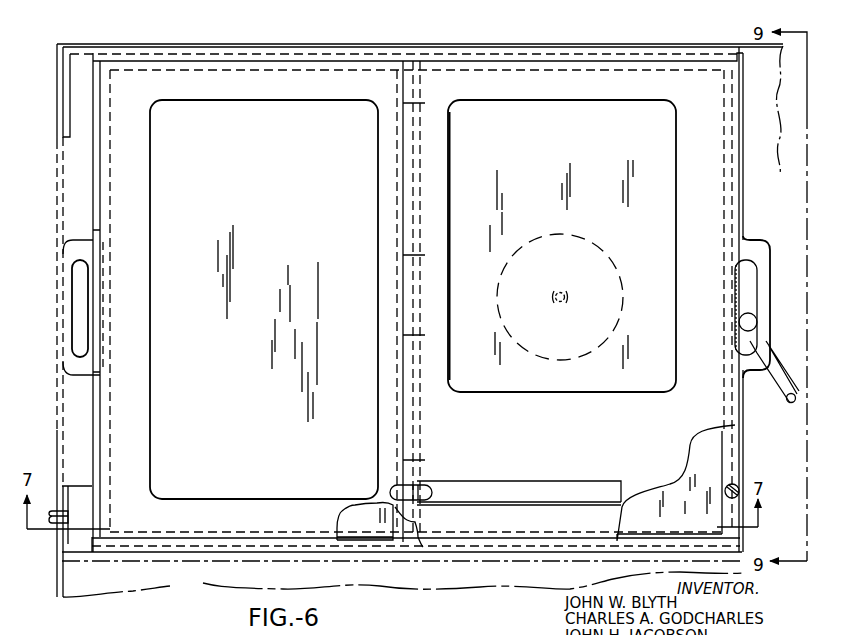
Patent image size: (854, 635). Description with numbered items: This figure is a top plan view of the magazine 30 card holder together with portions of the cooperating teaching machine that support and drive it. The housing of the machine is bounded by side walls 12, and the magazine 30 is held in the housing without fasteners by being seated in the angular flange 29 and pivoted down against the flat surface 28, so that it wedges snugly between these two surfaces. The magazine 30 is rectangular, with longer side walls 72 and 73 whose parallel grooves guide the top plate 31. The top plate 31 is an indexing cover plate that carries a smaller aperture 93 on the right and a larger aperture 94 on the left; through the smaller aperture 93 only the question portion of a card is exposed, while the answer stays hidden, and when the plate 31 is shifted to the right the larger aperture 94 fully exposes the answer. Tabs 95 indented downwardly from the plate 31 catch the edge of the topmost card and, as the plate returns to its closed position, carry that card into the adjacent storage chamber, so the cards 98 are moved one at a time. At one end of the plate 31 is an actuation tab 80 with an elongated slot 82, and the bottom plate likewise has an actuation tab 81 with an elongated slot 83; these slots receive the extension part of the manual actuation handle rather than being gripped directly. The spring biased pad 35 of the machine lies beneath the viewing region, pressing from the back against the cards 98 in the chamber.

The side walls 12 is at (58, 207).
The flat surface 28 is at (222, 44).
The angular flange 29 is at (75, 492).
The magazine 30 is at (360, 84).
The top plate 31 is at (580, 448).
The spring biased pad 35 is at (622, 298).
The side wall 72 is at (475, 548).
The side wall 73 is at (507, 56).
The actuation tab 80 is at (760, 257).
The actuation tab 81 is at (73, 250).
The elongated slot 82 is at (748, 291).
The elongated slot 83 is at (83, 284).
The smaller aperture 93 is at (677, 239).
The larger aperture 94 is at (377, 234).
The tabs 95 is at (407, 168).
The cards 98 is at (277, 449).